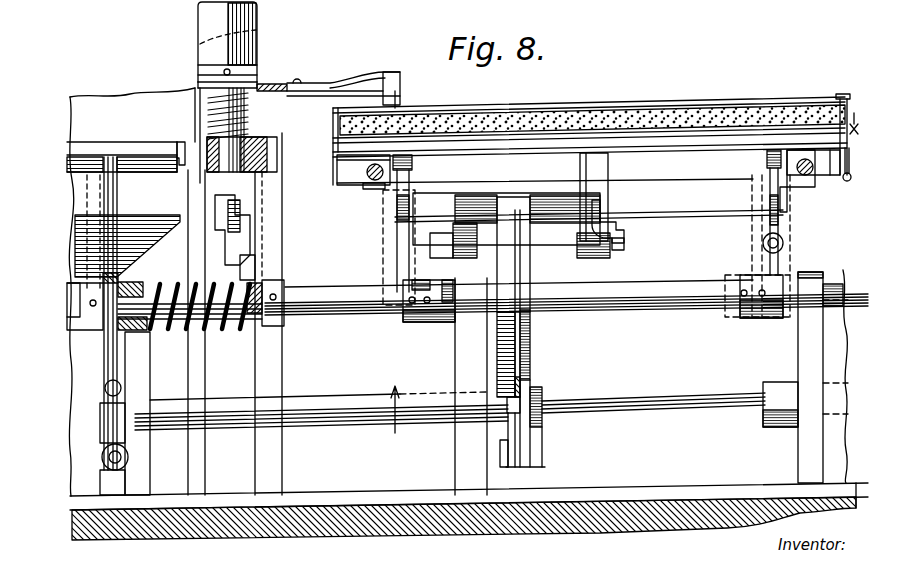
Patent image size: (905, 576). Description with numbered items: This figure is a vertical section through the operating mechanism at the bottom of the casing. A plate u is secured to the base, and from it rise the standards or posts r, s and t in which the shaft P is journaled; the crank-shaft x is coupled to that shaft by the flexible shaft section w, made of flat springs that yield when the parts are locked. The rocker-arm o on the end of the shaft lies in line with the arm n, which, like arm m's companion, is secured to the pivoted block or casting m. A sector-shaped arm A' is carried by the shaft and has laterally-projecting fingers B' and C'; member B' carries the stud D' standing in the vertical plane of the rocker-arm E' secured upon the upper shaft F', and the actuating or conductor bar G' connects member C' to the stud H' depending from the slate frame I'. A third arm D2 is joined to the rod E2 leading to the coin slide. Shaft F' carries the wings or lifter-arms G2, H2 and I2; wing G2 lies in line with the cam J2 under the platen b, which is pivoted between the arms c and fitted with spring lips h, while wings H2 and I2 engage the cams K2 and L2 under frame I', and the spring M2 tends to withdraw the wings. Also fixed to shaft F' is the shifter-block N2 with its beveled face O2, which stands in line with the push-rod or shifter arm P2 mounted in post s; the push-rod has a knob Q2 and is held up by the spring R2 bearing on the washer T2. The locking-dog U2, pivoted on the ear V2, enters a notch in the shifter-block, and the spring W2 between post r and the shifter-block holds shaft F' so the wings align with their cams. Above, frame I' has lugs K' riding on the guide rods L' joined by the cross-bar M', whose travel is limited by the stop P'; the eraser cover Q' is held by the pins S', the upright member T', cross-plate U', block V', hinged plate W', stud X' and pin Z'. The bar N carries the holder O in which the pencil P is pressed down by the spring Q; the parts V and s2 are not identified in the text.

The plate u is at (608, 492).
The post s is at (272, 400).
The post t is at (462, 335).
The crank-shaft x is at (768, 386).
The knob Q2 is at (257, 32).
The washer T2 is at (260, 80).
The spring R2 is at (248, 116).
The spring lips h is at (200, 100).
The locking-dog U2 is at (233, 204).
The beveled face O2 is at (336, 312).
The spring Q is at (328, 66).
The bar N is at (312, 95).
The holder O is at (400, 101).
The cross-plate U' is at (590, 127).
The cover Q' is at (592, 101).
The pins S' is at (832, 118).
The stud X' is at (854, 122).
The pin Z' is at (847, 187).
The guide rods L' is at (585, 202).
The lugs K' is at (577, 223).
The stop P' is at (560, 218).
The cross-bar M' is at (673, 169).
The frame I' is at (723, 106).
The plate W' is at (801, 113).
The plate V is at (789, 133).
The upright member T' is at (341, 171).
The block V' is at (329, 206).
The push-rod P2 is at (244, 217).
The wing H2 is at (396, 240).
The slot s2 is at (307, 273).
The cam K2 is at (412, 160).
The stud D' is at (448, 227).
The finger B' is at (506, 201).
The finger C' is at (579, 241).
The stud H' is at (609, 197).
The actuating bar G' is at (624, 227).
The sector-shaped arm A' is at (532, 332).
The arm D2 is at (543, 434).
The rod E2 is at (520, 424).
The rocker-arm E' is at (440, 301).
The shaft F' is at (566, 311).
The cam L2 is at (767, 157).
The spring M2 is at (784, 246).
The wing I2 is at (780, 264).
The flexible shaft section w is at (590, 398).
The pencil P is at (318, 383).
The platen b is at (100, 152).
The arms c is at (184, 164).
The cam J2 is at (120, 150).
The ear V2 is at (123, 213).
The wing G2 is at (127, 236).
The spring W2 is at (160, 287).
The shifter-block N2 is at (234, 326).
The rocker-arm o is at (97, 290).
The post r is at (142, 378).
The arm n is at (121, 389).
The casting m is at (115, 478).